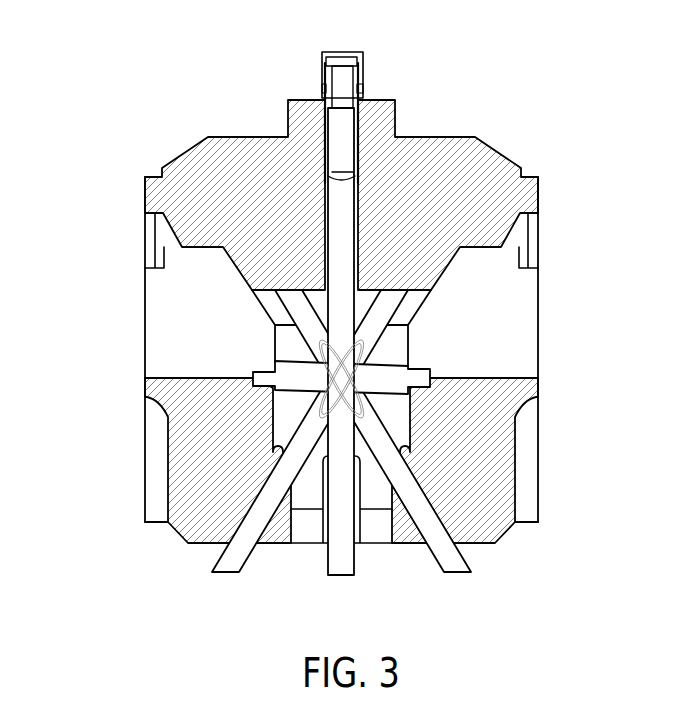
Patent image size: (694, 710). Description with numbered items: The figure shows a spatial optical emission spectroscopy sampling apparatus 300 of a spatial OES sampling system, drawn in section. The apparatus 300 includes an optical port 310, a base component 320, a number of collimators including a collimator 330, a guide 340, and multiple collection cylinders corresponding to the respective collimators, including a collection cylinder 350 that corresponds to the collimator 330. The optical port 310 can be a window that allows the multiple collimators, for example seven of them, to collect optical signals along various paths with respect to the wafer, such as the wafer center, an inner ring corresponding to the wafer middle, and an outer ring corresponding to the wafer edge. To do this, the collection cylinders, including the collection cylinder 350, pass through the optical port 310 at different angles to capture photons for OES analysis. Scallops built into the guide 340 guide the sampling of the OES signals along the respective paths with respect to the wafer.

The spatial OES sampling apparatus 300 is at (129, 64).
The optical port 310 is at (424, 388).
The base component 320 is at (538, 192).
The collimator 330 is at (358, 82).
The guide 340 is at (538, 522).
The collection cylinder 350 is at (354, 562).